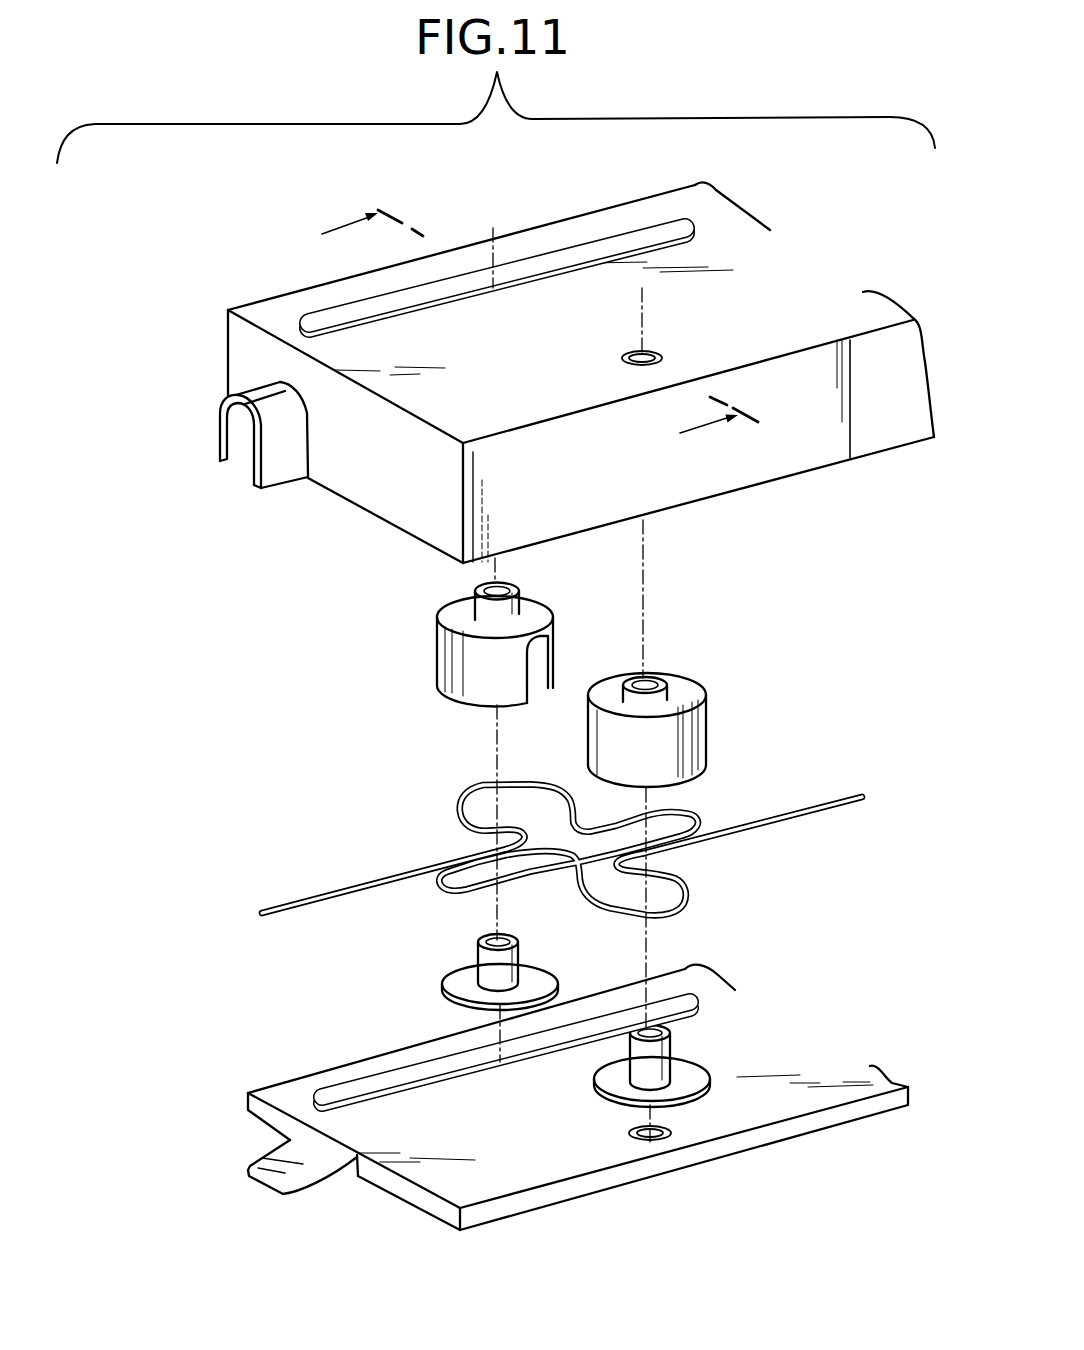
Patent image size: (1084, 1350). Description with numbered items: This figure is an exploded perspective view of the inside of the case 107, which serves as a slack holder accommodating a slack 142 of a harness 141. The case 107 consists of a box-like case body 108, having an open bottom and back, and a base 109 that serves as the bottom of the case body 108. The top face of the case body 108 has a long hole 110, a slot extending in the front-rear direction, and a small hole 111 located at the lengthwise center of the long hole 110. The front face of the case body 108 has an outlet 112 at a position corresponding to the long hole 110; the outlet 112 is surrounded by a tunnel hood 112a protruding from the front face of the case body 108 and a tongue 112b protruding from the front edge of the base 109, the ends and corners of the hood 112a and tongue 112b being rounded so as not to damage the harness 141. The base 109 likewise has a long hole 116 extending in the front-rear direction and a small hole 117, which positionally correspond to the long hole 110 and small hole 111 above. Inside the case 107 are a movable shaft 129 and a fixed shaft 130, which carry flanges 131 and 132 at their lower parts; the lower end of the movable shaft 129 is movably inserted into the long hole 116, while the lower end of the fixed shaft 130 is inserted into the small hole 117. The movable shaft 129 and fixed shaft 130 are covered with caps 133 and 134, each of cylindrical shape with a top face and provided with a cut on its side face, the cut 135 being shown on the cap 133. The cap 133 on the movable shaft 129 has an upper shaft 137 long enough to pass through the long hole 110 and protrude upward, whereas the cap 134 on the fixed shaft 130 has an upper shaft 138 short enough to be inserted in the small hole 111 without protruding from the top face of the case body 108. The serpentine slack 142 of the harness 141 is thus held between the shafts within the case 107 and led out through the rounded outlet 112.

The case 107 is at (496, 677).
The case body 108 is at (501, 370).
The base 109 is at (514, 1123).
The long hole 110 is at (580, 247).
The small hole 111 is at (660, 348).
The outlet 112 is at (196, 474).
The tunnel hood 112a is at (222, 397).
The tongue 112b is at (277, 1172).
The long hole 116 is at (338, 1082).
The small hole 117 is at (667, 1137).
The movable shaft 129 is at (485, 962).
The fixed shaft 130 is at (673, 1037).
The flange 131 is at (440, 965).
The flange 132 is at (652, 1080).
The cap 133 is at (431, 670).
The cap 134 is at (701, 694).
The cut 135 is at (539, 682).
The upper shaft 137 is at (477, 584).
The upper shaft 138 is at (657, 674).
The harness 141 is at (586, 839).
The slack 142 is at (683, 810).